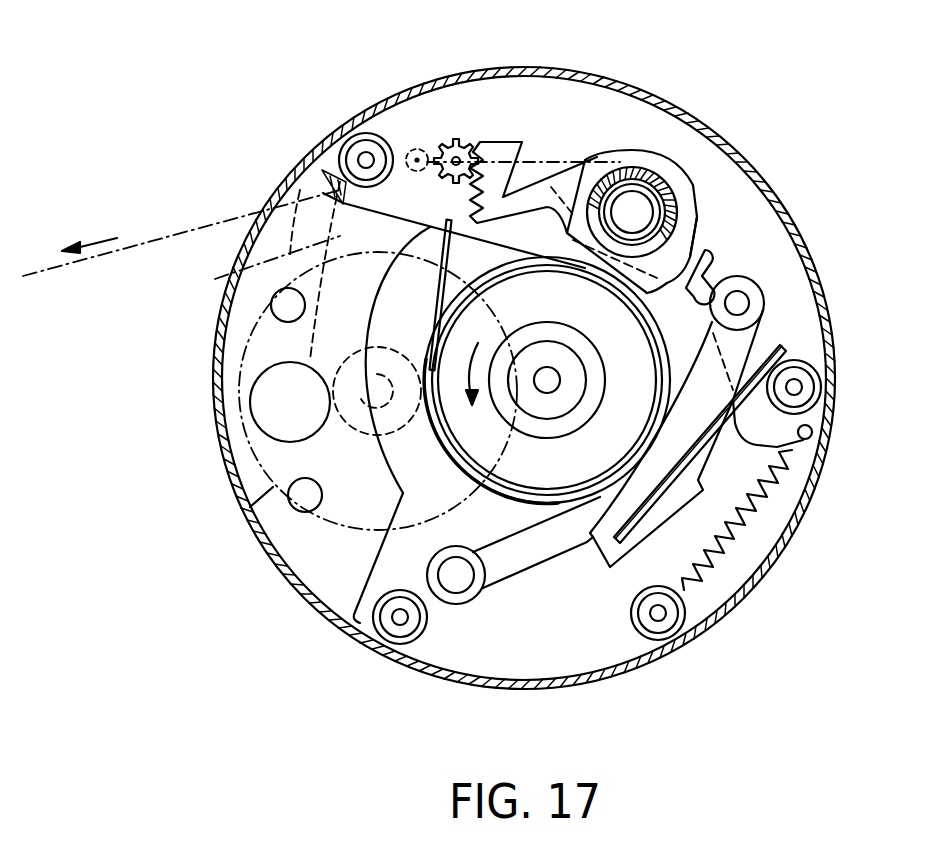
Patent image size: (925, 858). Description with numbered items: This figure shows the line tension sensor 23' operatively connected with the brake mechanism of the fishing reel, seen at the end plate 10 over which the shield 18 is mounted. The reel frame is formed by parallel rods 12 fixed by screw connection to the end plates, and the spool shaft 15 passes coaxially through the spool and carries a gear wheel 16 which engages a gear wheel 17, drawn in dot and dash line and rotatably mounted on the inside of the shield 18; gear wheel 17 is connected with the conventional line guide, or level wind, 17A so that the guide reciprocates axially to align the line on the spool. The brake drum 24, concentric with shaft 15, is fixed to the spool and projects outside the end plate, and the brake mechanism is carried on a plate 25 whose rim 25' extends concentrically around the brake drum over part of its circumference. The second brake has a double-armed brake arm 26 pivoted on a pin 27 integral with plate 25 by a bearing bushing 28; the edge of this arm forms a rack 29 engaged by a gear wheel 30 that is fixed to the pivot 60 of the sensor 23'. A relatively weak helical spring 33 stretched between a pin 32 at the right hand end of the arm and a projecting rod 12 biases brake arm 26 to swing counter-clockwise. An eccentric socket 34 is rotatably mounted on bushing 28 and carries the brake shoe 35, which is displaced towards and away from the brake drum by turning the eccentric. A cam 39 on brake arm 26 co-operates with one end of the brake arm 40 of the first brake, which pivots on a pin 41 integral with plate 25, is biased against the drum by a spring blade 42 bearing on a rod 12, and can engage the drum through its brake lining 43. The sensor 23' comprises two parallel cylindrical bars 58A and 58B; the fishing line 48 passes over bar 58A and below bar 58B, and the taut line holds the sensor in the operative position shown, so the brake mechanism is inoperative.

The end plate 10 is at (297, 545).
The rods 12 is at (800, 390).
The shaft 15 is at (552, 384).
The gear wheel 16 is at (570, 358).
The gear wheel 17 is at (250, 507).
The line guide (level wind) 17A is at (255, 265).
The shield 18 is at (784, 203).
The line tension sensor 23' is at (455, 107).
The brake drum 24 is at (440, 305).
The plate 25 is at (454, 459).
The rim 25' is at (539, 380).
The brake arm 26 is at (580, 162).
The pin 27 is at (642, 203).
The bearing bushing 28 is at (630, 187).
The rack 29 is at (468, 197).
The gear wheel 30 is at (478, 132).
The pin 32 is at (812, 433).
The helical spring 33 is at (778, 510).
The socket 34 is at (620, 167).
The brake shoe 35 is at (690, 212).
The cam 39 is at (706, 277).
The brake arm 40 is at (538, 553).
The pin 41 is at (460, 578).
The spring blade 42 is at (790, 345).
The brake lining 43 is at (588, 545).
The fishing line 48 is at (128, 255).
The cylindrical bar 58A is at (530, 150).
The cylindrical bar 58B is at (408, 148).
The pivot (shaft) 60 is at (463, 135).